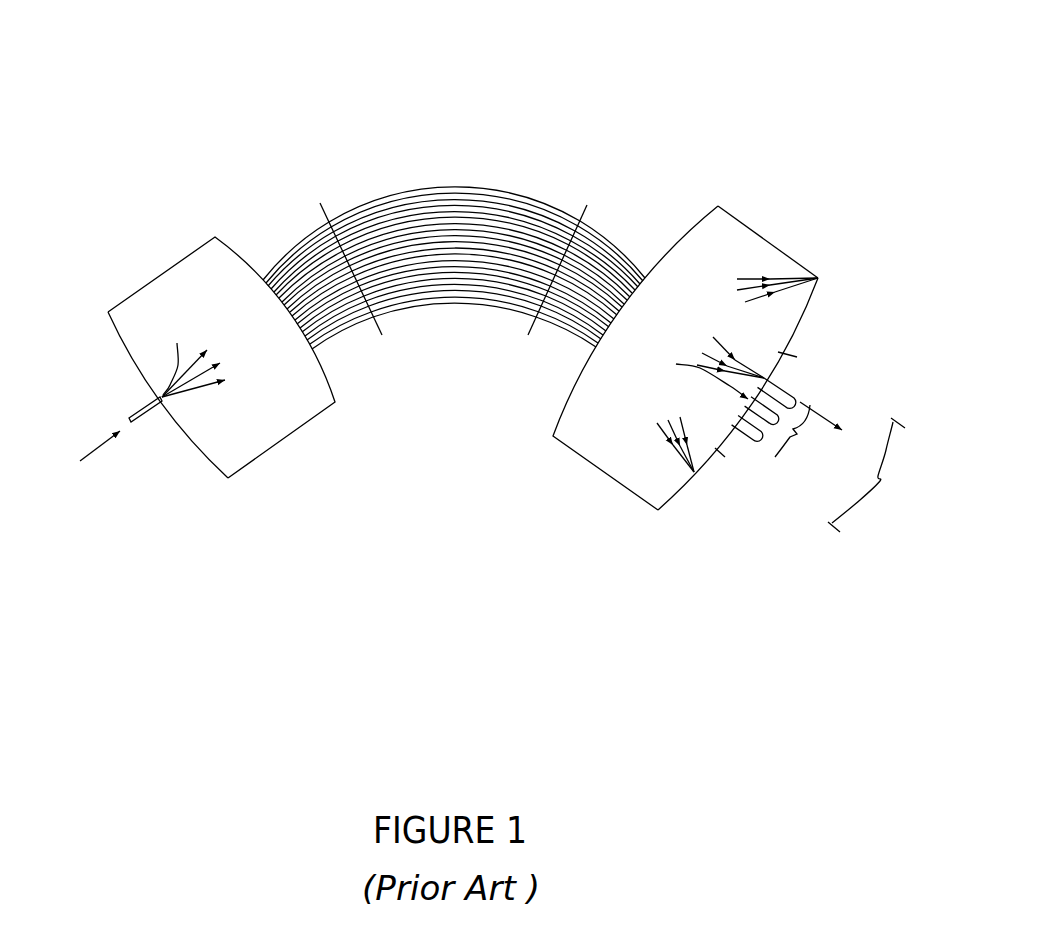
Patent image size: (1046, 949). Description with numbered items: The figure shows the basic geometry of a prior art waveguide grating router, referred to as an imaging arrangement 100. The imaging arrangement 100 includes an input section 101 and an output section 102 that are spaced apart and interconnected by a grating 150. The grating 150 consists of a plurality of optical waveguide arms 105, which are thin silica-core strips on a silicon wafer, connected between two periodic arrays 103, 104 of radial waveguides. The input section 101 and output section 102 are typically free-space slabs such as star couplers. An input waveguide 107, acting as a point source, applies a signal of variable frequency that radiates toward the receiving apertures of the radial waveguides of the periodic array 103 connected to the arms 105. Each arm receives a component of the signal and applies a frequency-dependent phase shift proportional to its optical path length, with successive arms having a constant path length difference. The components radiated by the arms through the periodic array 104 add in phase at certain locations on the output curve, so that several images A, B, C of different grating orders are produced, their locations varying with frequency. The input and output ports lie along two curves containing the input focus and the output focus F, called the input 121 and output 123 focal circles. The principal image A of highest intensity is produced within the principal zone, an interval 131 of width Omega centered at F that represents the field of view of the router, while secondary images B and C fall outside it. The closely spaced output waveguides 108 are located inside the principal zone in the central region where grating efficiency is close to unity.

The imaging arrangement 100 is at (807, 246).
The grating 150 is at (644, 218).
The input section 101 is at (207, 380).
The output section 102 is at (725, 358).
The periodic array of radial waveguides 103 is at (382, 343).
The periodic array of radial waveguides 104 is at (530, 347).
The optical waveguide arms 105 is at (395, 337).
The input waveguide 107 is at (147, 418).
The output waveguides 108 is at (800, 397).
The input focal circle 121 is at (197, 447).
The output focal circle 123 is at (800, 322).
The principal zone 131 is at (870, 475).